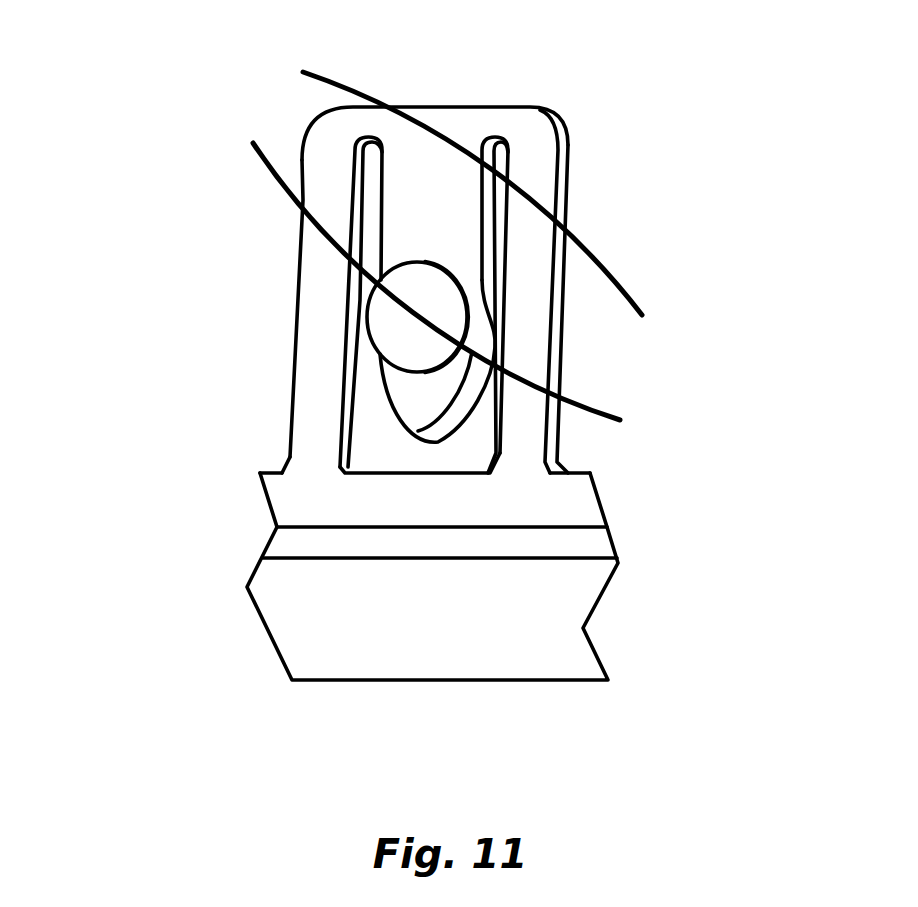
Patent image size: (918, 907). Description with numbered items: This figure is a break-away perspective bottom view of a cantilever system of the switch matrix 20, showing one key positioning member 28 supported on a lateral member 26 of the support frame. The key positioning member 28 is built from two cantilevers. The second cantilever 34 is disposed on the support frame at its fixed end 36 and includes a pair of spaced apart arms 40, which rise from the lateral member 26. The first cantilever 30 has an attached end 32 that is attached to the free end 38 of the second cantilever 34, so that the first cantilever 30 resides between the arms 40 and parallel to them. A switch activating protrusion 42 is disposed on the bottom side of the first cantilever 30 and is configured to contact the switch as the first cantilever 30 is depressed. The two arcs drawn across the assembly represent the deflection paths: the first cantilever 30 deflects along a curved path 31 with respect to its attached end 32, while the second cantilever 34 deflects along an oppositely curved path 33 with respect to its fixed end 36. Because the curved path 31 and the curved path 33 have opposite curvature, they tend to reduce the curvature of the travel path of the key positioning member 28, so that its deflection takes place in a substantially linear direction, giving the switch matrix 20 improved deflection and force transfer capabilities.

The switch matrix 20 is at (270, 645).
The lateral member 26 is at (603, 505).
The key positioning member 28 is at (495, 350).
The first cantilever 30 is at (455, 257).
The curved path 31 is at (265, 171).
The attached end 32 is at (472, 133).
The curved path 33 is at (363, 95).
The second cantilever 34 is at (308, 323).
The fixed end 36 is at (295, 462).
The free end 38 is at (555, 122).
The arms 40 is at (298, 255).
The switch activating protrusion 42 is at (435, 298).